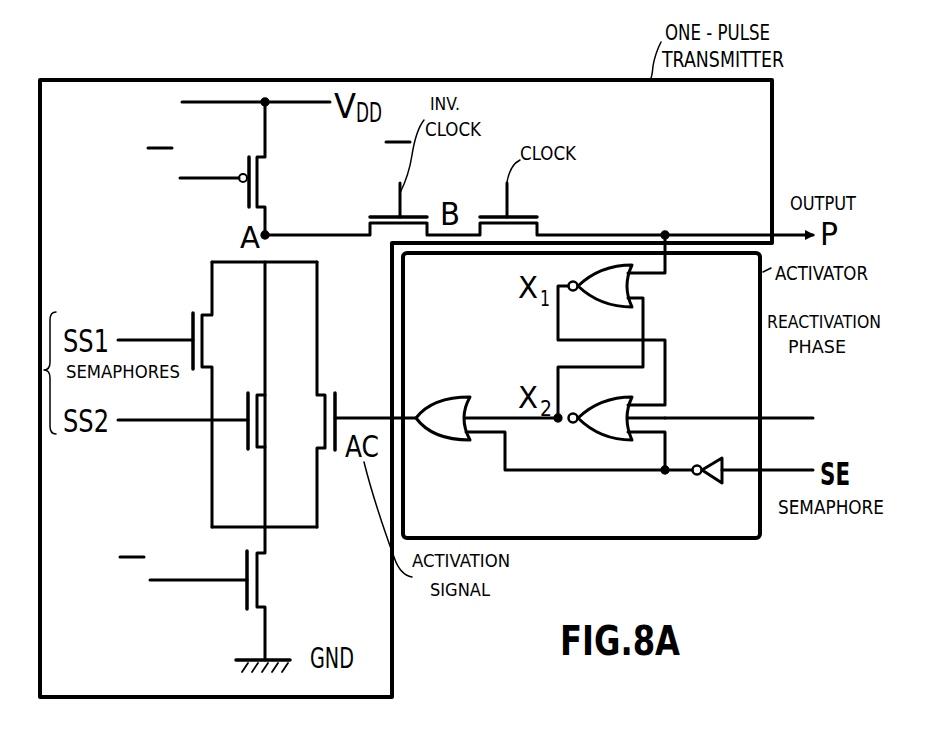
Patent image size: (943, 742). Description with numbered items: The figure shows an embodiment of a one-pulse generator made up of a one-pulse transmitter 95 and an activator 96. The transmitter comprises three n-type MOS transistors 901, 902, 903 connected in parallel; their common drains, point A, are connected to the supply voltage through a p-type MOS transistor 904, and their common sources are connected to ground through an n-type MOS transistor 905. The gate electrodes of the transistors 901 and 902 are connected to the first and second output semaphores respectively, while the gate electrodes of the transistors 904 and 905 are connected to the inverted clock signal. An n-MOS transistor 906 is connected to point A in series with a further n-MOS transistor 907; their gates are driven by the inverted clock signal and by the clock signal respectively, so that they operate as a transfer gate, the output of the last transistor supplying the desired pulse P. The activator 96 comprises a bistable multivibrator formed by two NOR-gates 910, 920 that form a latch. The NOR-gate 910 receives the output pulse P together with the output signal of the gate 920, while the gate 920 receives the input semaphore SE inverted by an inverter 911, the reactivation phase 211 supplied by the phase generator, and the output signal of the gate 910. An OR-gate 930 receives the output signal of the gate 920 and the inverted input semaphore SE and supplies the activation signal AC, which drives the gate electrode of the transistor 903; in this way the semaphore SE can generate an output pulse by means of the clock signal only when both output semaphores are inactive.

The one-pulse transmitter 95 is at (772, 155).
The activator 96 is at (722, 554).
The reactivation phase 211 is at (854, 336).
The n-type MOS transistor 901 is at (188, 328).
The n-type MOS transistor 902 is at (238, 436).
The n-type MOS transistor 903 is at (342, 402).
The p-type MOS transistor 904 is at (239, 200).
The n-type MOS transistor 905 is at (266, 581).
The n-MOS transistor 906 is at (360, 224).
The n-MOS transistor 907 is at (540, 215).
The NOR-gate 910 is at (637, 292).
The NOR-gate 920 is at (590, 438).
The OR-gate 930 is at (425, 438).
The inverter 911 is at (712, 485).